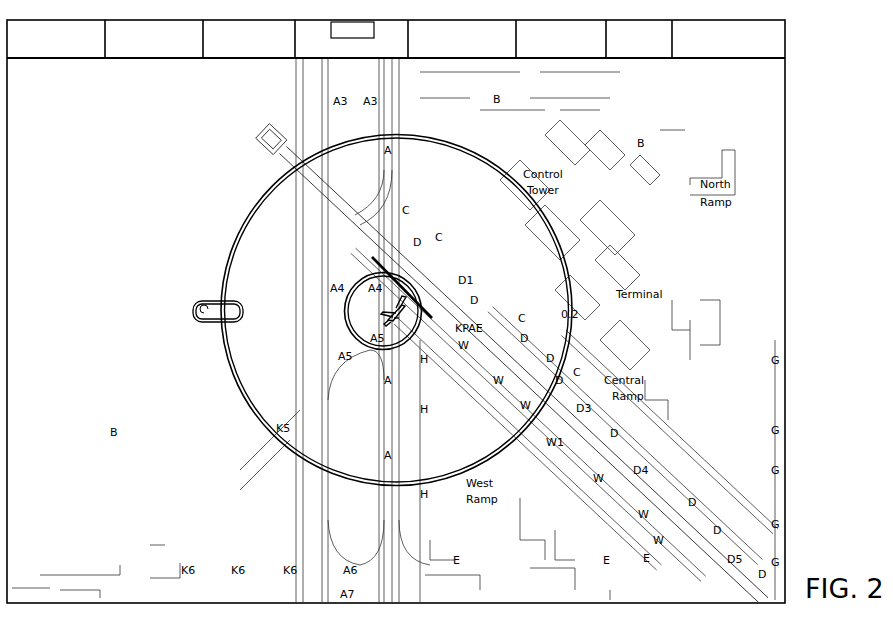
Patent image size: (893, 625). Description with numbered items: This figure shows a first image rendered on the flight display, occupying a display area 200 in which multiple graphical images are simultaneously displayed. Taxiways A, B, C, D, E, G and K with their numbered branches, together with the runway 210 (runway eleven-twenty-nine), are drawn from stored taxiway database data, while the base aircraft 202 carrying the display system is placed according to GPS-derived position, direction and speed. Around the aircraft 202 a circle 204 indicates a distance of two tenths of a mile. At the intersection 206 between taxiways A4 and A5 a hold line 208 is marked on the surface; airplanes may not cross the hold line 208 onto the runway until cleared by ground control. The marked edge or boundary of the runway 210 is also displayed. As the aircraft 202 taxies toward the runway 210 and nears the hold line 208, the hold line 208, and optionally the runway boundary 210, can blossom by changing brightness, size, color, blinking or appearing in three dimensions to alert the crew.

The display area 200 is at (785, 190).
The base aircraft 202 is at (347, 317).
The circle 204 is at (240, 236).
The intersection 206 is at (386, 312).
The hold line 208 is at (372, 262).
The runway 210 is at (283, 148).